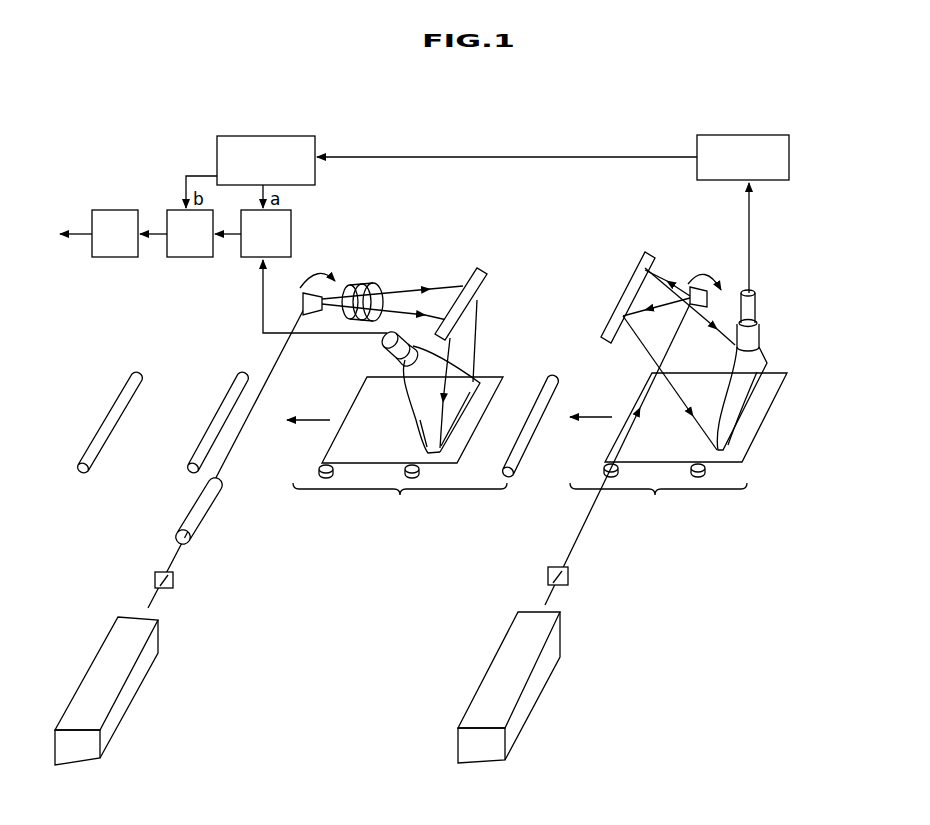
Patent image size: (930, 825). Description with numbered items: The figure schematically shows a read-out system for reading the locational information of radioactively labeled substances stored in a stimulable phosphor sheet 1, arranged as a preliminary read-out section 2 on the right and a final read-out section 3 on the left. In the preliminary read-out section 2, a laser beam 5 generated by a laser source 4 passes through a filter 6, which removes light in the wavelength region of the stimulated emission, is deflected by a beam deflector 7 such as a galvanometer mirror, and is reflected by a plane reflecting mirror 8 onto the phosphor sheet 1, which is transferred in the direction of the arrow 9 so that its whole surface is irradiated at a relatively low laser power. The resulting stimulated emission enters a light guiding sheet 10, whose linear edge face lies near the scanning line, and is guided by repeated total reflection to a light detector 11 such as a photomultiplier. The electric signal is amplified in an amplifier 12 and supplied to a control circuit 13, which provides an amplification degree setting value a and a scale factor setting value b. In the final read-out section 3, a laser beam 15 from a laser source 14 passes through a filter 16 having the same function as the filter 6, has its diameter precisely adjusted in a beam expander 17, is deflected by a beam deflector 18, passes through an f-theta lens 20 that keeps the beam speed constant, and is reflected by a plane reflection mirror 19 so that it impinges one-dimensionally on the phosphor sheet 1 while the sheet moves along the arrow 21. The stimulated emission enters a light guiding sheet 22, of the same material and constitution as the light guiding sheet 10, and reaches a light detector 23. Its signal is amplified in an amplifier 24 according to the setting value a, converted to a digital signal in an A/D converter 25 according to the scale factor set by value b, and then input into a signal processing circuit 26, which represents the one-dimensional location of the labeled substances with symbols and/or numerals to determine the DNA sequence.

The stimulable phosphor sheet 1 is at (470, 425).
The preliminary read-out section 2 is at (658, 509).
The final read-out section 3 is at (400, 520).
The laser source 4 is at (530, 688).
The laser beam 5 is at (550, 592).
The filter 6 is at (595, 582).
The beam deflector 7 is at (697, 285).
The plane reflecting mirror 8 is at (637, 258).
The arrow 9 is at (590, 416).
The light guiding sheet 10 is at (757, 367).
The light detector 11 is at (757, 325).
The amplifier 12 is at (722, 138).
The control circuit 13 is at (237, 140).
The laser source 14 is at (135, 690).
The laser beam 15 is at (152, 597).
The filter 16 is at (175, 579).
The beam expander 17 is at (225, 550).
The beam deflector 18 is at (330, 288).
The plane reflection mirror 19 is at (479, 268).
The f-theta lens 20 is at (372, 290).
The arrow 21 is at (310, 422).
The light guiding sheet 22 is at (460, 382).
The light detector 23 is at (388, 347).
The amplifier 24 is at (255, 256).
The A/D converter 25 is at (180, 256).
The signal processing circuit 26 is at (113, 215).